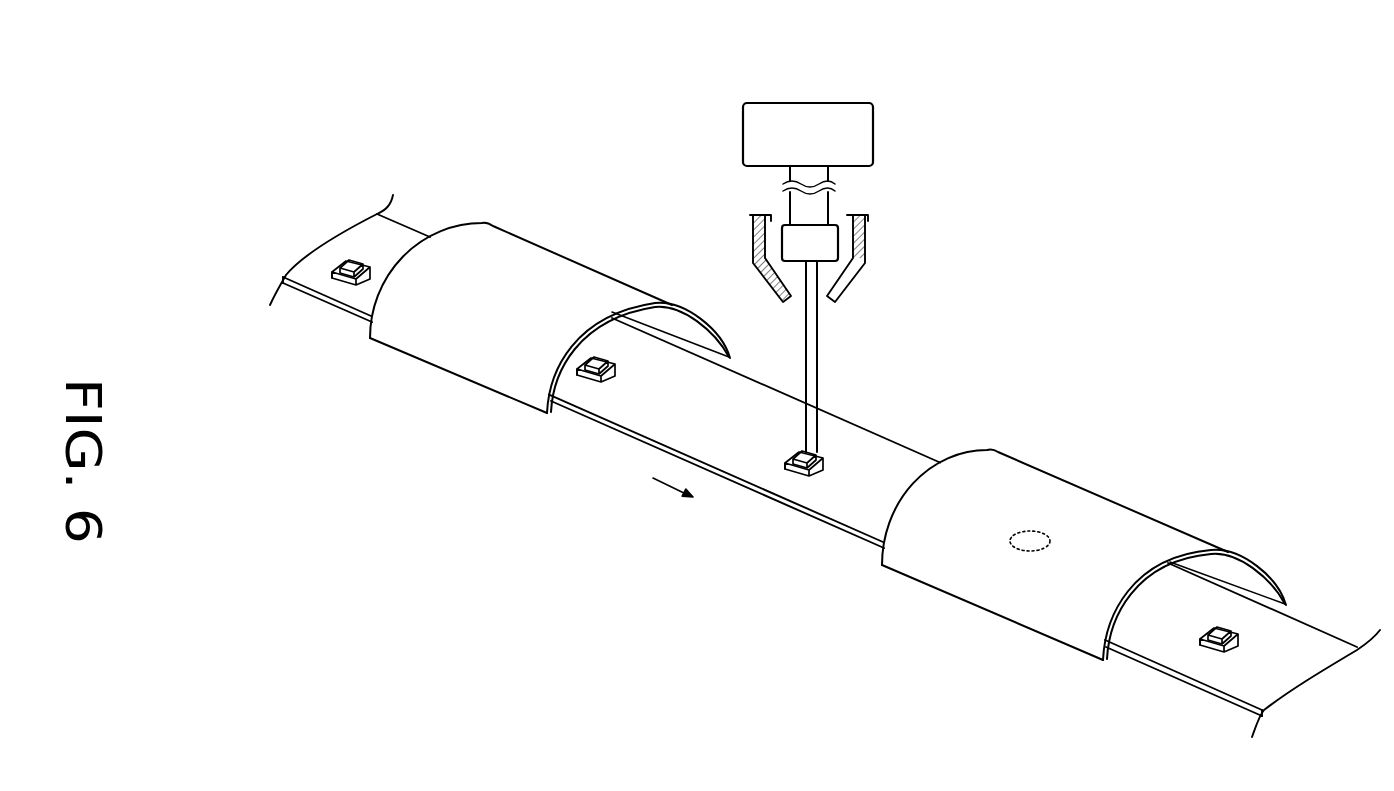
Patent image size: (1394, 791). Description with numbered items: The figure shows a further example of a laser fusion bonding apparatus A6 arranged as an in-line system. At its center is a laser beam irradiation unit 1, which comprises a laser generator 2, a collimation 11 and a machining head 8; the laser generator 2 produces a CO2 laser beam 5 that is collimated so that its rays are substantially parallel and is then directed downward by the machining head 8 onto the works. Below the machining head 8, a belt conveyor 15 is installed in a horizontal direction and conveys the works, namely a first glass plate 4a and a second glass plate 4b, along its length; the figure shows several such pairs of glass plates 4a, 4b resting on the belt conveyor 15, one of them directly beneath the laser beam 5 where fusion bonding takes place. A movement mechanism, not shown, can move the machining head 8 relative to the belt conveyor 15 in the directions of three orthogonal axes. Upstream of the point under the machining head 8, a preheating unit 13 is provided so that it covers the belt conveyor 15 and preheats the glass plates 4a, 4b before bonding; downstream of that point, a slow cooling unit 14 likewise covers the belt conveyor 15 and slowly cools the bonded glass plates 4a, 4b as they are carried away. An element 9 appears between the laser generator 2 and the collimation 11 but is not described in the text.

The laser fusion bonding apparatus A6 is at (566, 124).
The laser beam irradiation unit 1 is at (881, 202).
The laser generator 2 is at (877, 153).
The wire feed member 9 is at (830, 205).
The collimation 11 is at (840, 245).
The machining head 8 is at (858, 258).
The laser beam 5 is at (820, 380).
The belt conveyor 15 is at (883, 438).
The preheating unit 13 is at (548, 247).
The slow cooling unit 14 is at (1162, 518).
The glass plate 4a is at (351, 258).
The glass plate 4b is at (378, 274).